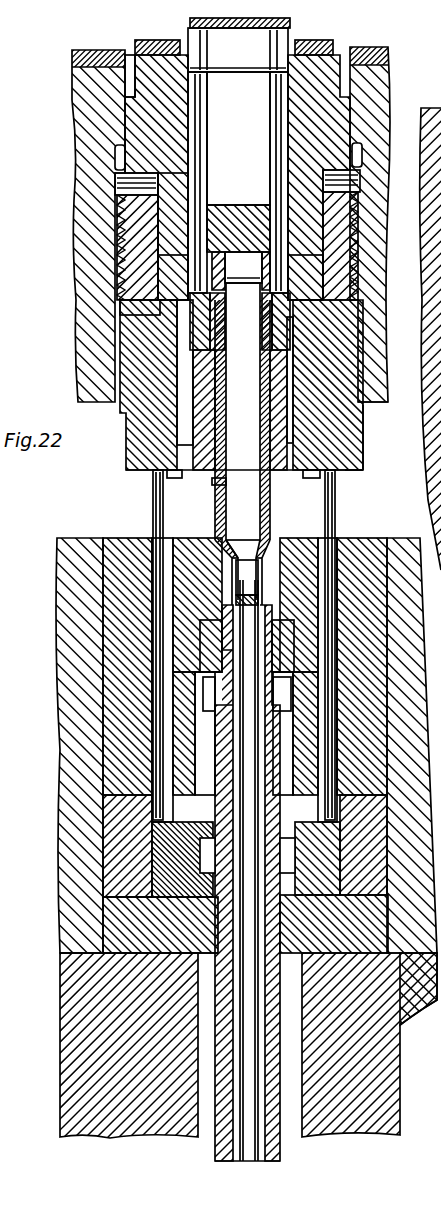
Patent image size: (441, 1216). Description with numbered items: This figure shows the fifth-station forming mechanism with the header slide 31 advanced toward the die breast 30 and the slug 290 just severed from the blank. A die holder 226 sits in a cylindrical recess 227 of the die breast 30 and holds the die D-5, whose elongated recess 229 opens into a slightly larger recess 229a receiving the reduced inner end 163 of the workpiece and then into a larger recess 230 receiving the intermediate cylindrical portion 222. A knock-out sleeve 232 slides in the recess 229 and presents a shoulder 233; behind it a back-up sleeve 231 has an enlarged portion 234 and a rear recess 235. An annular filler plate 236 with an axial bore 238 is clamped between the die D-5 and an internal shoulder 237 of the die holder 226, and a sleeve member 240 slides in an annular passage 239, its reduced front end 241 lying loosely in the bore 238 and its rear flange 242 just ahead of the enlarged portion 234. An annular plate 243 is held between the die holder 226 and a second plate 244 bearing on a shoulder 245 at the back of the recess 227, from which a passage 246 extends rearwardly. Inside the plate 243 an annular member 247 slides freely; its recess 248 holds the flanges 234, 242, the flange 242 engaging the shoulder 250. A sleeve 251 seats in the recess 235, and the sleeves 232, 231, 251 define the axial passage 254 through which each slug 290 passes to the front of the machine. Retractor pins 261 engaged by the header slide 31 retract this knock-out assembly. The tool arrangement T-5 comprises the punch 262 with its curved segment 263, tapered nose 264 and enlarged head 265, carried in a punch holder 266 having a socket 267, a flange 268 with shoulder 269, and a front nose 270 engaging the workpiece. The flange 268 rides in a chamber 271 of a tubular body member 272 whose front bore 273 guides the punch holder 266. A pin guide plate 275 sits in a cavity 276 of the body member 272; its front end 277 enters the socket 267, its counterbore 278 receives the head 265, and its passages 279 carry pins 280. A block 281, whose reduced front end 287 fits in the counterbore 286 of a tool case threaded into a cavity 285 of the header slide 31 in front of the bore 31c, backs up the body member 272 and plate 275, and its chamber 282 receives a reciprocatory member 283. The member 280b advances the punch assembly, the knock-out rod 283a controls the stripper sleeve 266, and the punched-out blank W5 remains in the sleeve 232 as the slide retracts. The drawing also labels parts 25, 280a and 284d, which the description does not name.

The die breast 30 is at (72, 556).
The header slide 31 is at (80, 53).
The bore 31c is at (128, 78).
The reduced diameter inner end 163 is at (233, 557).
The intermediate cylindrical portion 222 is at (222, 530).
The die holder 226 is at (135, 528).
The cylindrical recess 227 is at (103, 576).
The elongated cylindrical recess 229 is at (262, 582).
The cylindrical recess 229a is at (290, 560).
The cylindrical recess 230 is at (228, 545).
The back-up sleeve 231 is at (276, 720).
The knock-out sleeve 232 is at (290, 606).
The annular shoulder 233 is at (300, 662).
The enlarged portion 234 is at (290, 870).
The cylindrical recess 235 is at (334, 924).
The annular filler plate 236 is at (205, 651).
The annular internal shoulder 237 is at (198, 733).
The axial bore 238 is at (222, 634).
The annular passage 239 is at (280, 695).
The sleeve member 240 is at (282, 758).
The reduced diameter front end 241 is at (292, 690).
The annular flange 242 is at (330, 823).
The annular plate 243 is at (130, 856).
The annular plate 244 is at (100, 920).
The annular shoulder 245 is at (129, 1045).
The passage 246 is at (300, 1067).
The annular member 247 is at (163, 868).
The cylindrical recess 248 is at (160, 925).
The annular internal shoulder 250 is at (205, 830).
The sleeve 251 is at (276, 1150).
The axial passage 254 is at (245, 1062).
The casing 25 is at (430, 587).
The retractor pins 261 is at (160, 490).
The punch 262 is at (242, 411).
The curved segment 263 is at (239, 552).
The tapered nose 264 is at (270, 542).
The enlarged head 265 is at (241, 271).
The punch holder 266 is at (213, 437).
The cylindrical socket 267 is at (300, 310).
The flange 268 is at (165, 322).
The annular shoulder 269 is at (148, 385).
The annular nose 270 is at (272, 478).
The cylindrical chamber 271 is at (290, 350).
The body member 272 is at (180, 282).
The bore 273 is at (168, 474).
The pin guide plate 275 is at (282, 254).
The cavity 276 is at (300, 270).
The reduced diameter front end 277 is at (215, 318).
The counterbore 278 is at (225, 256).
The passages 279 is at (165, 250).
The pins 280 is at (278, 163).
The nut 280a is at (120, 128).
The header slide lever 280b is at (135, 45).
The block 281 is at (145, 103).
The chamber 282 is at (253, 125).
The reciprocatory member 283 is at (290, 32).
The knock-out rod 283a is at (192, 26).
The shoulder 284d is at (360, 408).
The cavity 285 is at (352, 183).
The counterbore 286 is at (150, 302).
The reduced diameter front end 287 is at (117, 230).
The slug 290 is at (236, 599).
The tool arrangement T-5 is at (349, 480).
The punched-out blank W5 is at (211, 487).
The die D-5 is at (300, 540).